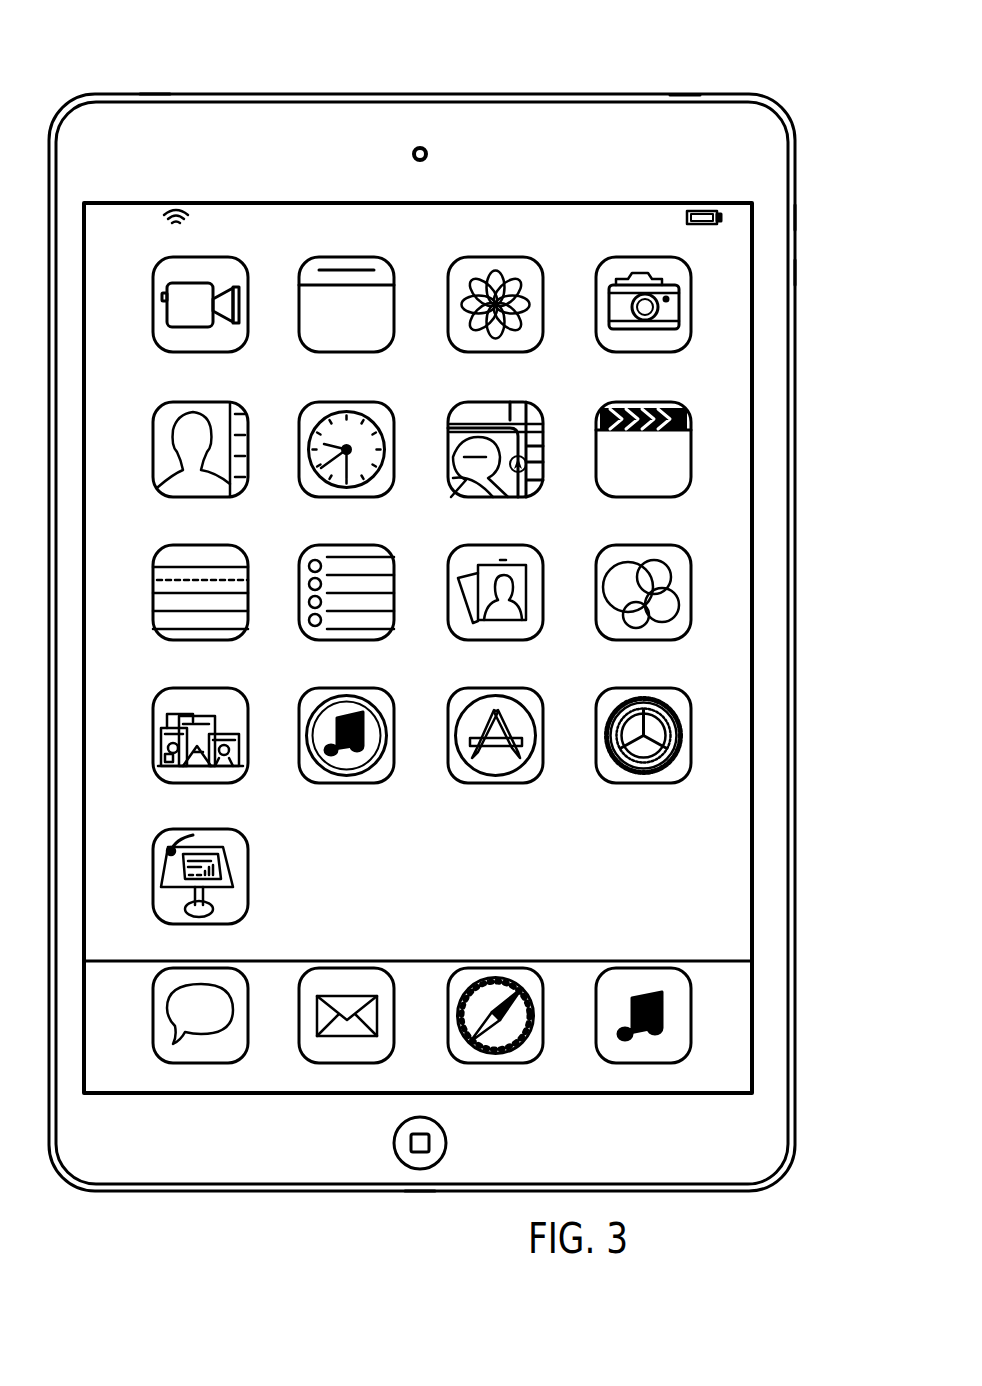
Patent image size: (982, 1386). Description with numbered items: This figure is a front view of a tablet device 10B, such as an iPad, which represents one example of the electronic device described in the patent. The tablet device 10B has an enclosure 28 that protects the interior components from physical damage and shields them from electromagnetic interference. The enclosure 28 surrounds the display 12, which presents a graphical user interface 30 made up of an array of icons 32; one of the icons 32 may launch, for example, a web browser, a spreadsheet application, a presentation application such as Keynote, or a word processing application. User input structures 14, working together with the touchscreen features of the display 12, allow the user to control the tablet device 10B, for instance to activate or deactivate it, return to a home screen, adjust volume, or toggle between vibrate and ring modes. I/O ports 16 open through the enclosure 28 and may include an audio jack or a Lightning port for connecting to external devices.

The tablet device 10B is at (170, 27).
The display 12 is at (753, 858).
The user input structures 14 is at (683, 94).
The I/O ports 16 is at (155, 95).
The enclosure 28 is at (794, 606).
The graphical user interface 30 is at (471, 649).
The icons 32 is at (248, 872).